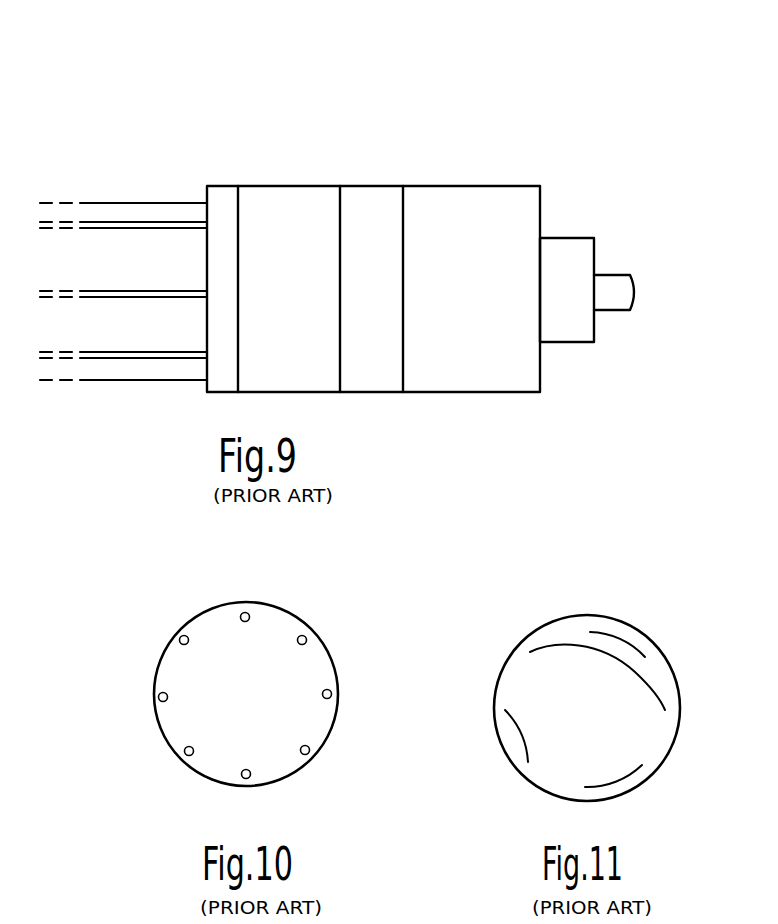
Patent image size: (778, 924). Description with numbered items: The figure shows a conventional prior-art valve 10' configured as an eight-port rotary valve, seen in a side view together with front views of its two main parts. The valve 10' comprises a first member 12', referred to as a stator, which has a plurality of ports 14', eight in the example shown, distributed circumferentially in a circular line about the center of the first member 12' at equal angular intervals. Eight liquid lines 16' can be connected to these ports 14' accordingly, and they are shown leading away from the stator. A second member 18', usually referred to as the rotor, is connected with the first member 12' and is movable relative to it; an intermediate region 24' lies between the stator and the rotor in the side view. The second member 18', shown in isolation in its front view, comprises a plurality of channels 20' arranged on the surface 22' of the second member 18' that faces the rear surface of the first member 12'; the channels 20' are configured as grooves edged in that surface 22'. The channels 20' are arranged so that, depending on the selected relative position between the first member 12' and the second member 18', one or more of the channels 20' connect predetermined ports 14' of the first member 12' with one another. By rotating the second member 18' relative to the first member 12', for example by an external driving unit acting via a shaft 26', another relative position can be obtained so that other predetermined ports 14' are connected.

In FIG. 9, the valve 10' is at (397, 199).
In FIG. 9, the first member 12' is at (289, 226).
In FIG. 10, the first member 12' is at (285, 631).
In FIG. 10, the ports 14' is at (199, 672).
In FIG. 9, the liquid lines 16' is at (123, 238).
In FIG. 9, the second member 18' is at (487, 214).
In FIG. 11, the second member 18' is at (587, 622).
In FIG. 11, the channels 20' is at (611, 667).
In FIG. 11, the surface 22' is at (528, 670).
In FIG. 9, the ring 24' is at (370, 216).
In FIG. 9, the shaft 26' is at (638, 236).